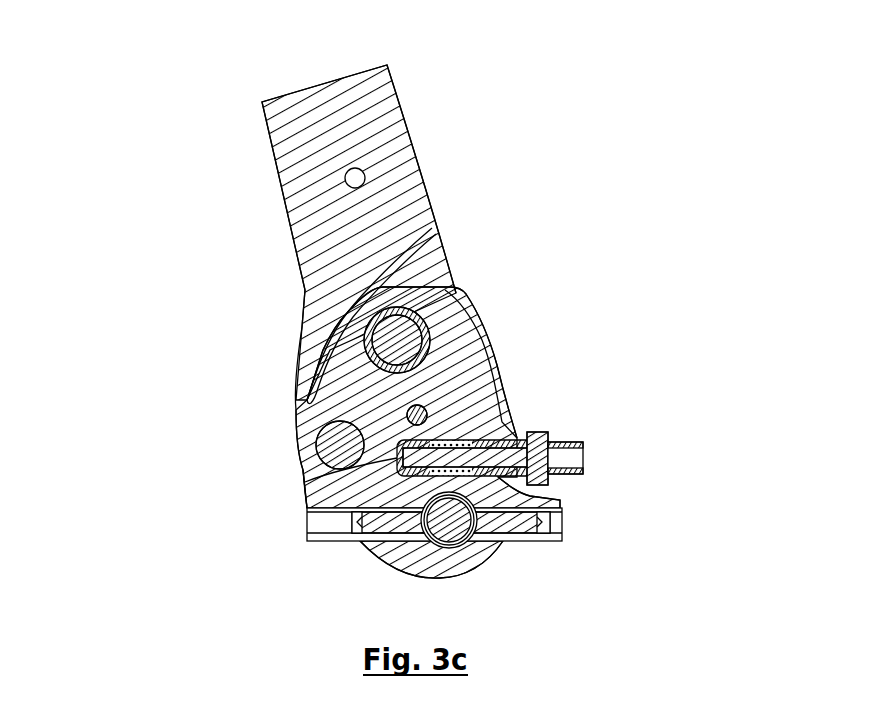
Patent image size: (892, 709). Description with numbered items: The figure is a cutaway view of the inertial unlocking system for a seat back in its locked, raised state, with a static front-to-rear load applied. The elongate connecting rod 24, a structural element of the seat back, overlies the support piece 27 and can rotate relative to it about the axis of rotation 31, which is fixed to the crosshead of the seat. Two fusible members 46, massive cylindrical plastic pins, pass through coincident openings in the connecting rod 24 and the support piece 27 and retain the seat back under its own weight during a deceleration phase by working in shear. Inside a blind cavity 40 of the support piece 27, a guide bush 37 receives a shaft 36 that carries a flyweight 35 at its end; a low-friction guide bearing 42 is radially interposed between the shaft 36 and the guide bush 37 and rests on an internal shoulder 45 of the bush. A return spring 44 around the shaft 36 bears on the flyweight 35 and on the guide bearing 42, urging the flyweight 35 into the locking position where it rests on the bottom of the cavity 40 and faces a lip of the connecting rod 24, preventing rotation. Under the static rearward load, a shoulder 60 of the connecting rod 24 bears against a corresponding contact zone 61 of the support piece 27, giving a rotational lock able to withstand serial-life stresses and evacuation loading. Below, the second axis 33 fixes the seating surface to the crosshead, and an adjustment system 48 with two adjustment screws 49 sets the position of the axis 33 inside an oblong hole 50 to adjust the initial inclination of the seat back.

The connecting rod 24 is at (377, 140).
The fusible member 46 is at (422, 313).
The flyweight 35 is at (419, 406).
The return spring 44 is at (500, 362).
The axis of rotation 31 is at (393, 335).
The guide bush 37 is at (502, 438).
The shoulder 60 is at (323, 395).
The contact zone 61 is at (309, 408).
The guide bearing 42 is at (537, 432).
The internal shoulder 45 is at (583, 443).
The blind cavity 40 is at (305, 470).
The shaft 36 is at (562, 500).
The support piece 27 is at (305, 492).
The adjustment screw 49 is at (545, 545).
The adjustment system 48 is at (320, 522).
The oblong hole 50 is at (503, 550).
The second axis 33 is at (450, 523).